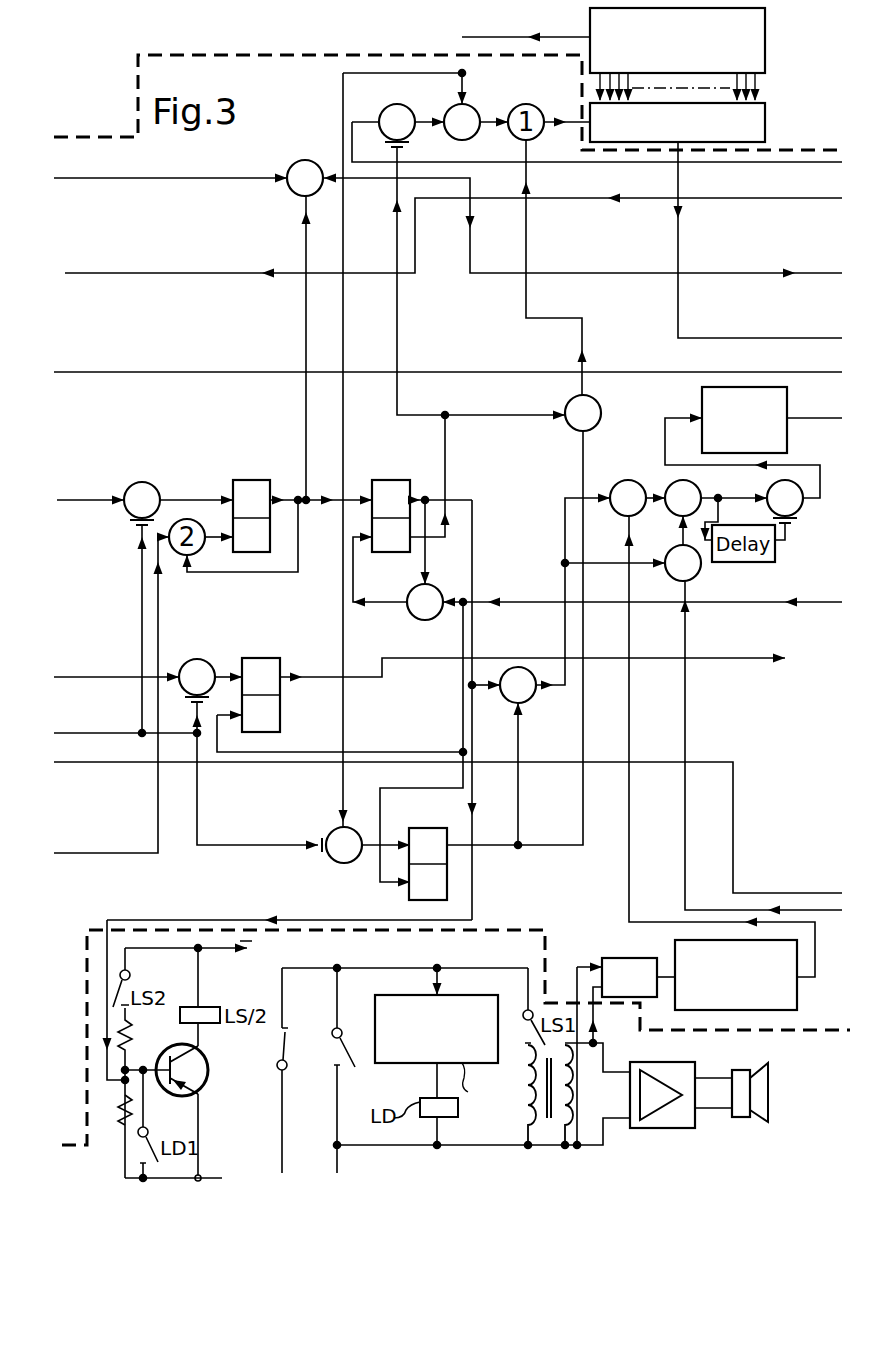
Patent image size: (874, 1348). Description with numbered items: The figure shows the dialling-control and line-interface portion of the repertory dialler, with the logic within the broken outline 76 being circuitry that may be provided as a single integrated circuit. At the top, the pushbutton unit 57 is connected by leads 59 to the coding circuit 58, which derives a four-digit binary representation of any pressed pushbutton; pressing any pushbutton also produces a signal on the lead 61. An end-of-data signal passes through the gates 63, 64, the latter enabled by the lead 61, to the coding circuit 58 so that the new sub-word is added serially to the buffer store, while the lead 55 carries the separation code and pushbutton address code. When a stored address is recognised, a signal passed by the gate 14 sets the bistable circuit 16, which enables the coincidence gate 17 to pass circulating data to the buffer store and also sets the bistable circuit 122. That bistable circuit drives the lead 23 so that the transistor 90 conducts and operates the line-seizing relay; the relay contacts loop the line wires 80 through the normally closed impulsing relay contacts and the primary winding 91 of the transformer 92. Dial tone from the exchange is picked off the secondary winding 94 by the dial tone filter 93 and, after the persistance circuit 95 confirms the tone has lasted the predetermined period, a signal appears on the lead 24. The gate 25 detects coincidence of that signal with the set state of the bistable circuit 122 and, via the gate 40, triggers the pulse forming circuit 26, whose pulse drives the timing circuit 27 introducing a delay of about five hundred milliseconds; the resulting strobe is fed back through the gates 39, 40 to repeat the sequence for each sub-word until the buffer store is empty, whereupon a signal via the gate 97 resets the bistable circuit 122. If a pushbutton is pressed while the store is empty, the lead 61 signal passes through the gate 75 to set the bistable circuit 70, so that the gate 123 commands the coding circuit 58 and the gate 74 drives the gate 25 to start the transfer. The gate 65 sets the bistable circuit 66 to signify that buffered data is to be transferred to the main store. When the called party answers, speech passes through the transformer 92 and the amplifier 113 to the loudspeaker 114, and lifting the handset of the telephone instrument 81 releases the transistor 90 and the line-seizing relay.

The broken outline 76 is at (242, 55).
The lead 61 is at (462, 36).
The pushbutton unit 57 is at (767, 33).
The leads 59 is at (767, 88).
The coding circuit 58 is at (767, 125).
The gate 63 is at (398, 108).
The gate 64 is at (476, 111).
The coincidence gate 17 is at (294, 157).
The lead 55 is at (366, 372).
The gate 123 is at (596, 408).
The timing circuit 27 is at (702, 402).
The gate 14 is at (157, 486).
The bistable circuit 16 is at (278, 474).
The bistable circuit 122 is at (388, 480).
The gate 25 is at (620, 482).
The gate 40 is at (676, 514).
The pulse forming circuit 26 is at (752, 490).
The lead 23 is at (472, 580).
The gate 97 is at (438, 588).
The gate 39 is at (698, 578).
The gate 65 is at (202, 658).
The bistable circuit 66 is at (270, 658).
The gate 74 is at (518, 667).
The lead 24 is at (632, 717).
The gate 75 is at (337, 864).
The bistable circuit 70 is at (409, 898).
The telephone instrument 81 is at (458, 995).
The dial tone filter 93 is at (624, 958).
The persistance circuit 95 is at (680, 940).
The transistor 90 is at (209, 1071).
The line wires 80 is at (282, 1118).
The primary winding 91 is at (534, 1104).
The transformer 92 is at (554, 1104).
The secondary winding 94 is at (574, 1088).
The amplifier 113 is at (645, 1128).
The loudspeaker 114 is at (740, 1117).